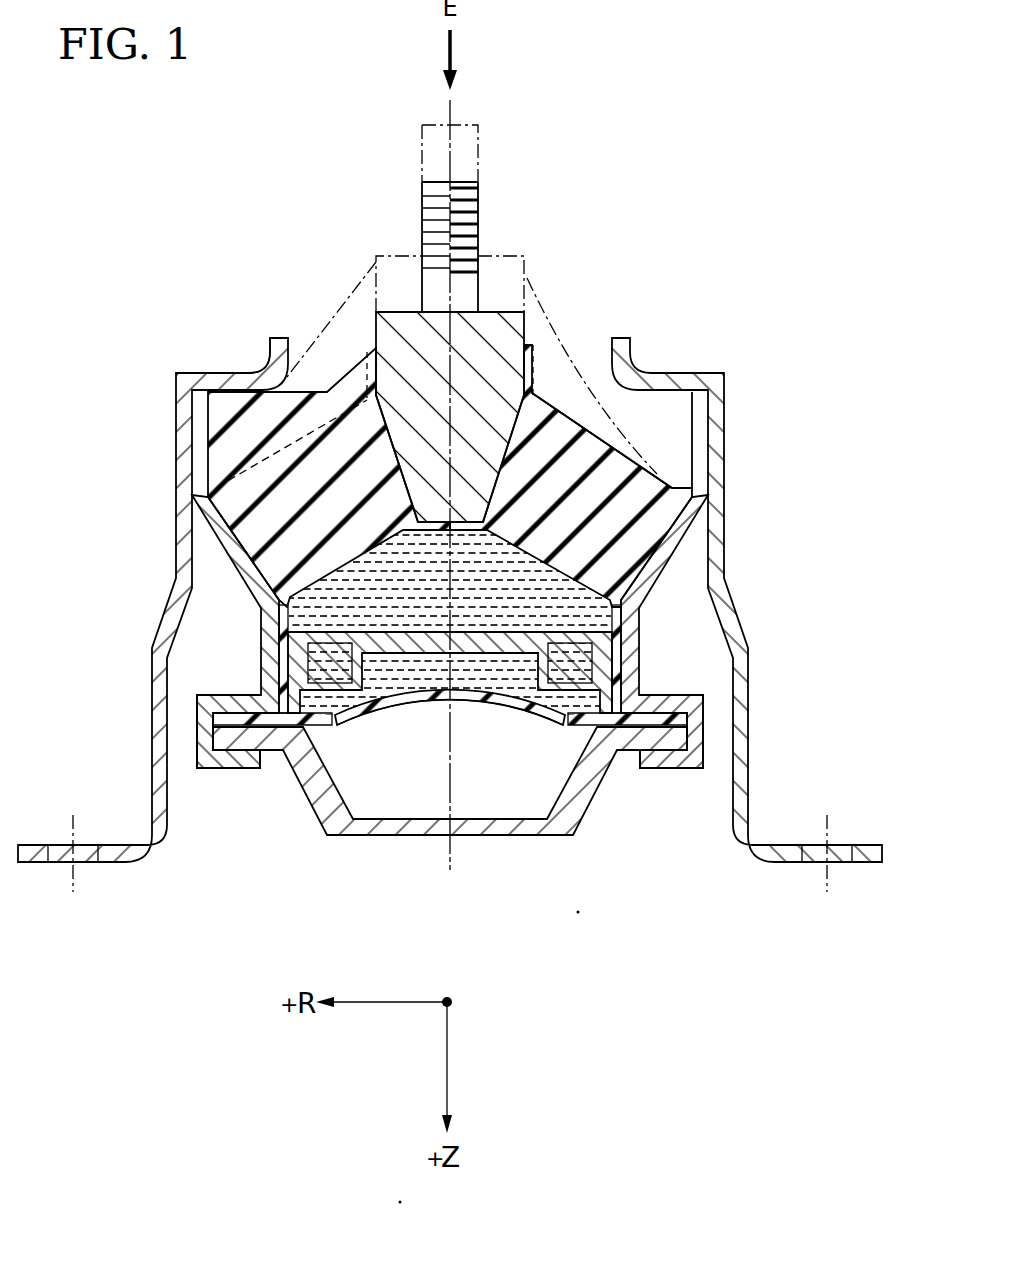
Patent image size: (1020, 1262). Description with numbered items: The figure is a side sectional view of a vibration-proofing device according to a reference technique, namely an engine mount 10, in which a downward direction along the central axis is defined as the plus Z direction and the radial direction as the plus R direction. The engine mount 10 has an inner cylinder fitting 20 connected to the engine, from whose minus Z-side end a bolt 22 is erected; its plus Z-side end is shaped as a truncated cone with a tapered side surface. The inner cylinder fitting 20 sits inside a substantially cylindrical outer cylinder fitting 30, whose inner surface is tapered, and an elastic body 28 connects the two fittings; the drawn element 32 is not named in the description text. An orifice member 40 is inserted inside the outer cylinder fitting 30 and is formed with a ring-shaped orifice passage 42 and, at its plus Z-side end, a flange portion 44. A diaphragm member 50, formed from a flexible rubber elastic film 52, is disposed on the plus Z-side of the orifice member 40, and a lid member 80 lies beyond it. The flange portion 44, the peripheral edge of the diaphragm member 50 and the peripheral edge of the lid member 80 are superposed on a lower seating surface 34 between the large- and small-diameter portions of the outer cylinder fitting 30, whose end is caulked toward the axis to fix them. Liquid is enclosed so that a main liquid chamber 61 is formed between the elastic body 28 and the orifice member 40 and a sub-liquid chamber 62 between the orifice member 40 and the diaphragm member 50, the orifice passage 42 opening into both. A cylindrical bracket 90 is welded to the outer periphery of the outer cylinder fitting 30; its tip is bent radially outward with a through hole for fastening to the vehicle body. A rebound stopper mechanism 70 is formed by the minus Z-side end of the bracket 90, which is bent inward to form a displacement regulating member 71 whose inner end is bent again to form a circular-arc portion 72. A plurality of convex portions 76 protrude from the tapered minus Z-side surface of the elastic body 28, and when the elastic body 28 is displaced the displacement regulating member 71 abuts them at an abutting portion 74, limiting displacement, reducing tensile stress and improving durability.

The engine mount 10 is at (650, 151).
The inner cylinder fitting 20 is at (497, 330).
The bolt 22 is at (478, 220).
The elastic body 28 is at (640, 497).
The outer cylinder fitting 30 is at (697, 540).
The second mounting member 32 is at (653, 576).
The lower seating surface 34 is at (663, 730).
The orifice member 40 is at (596, 660).
The orifice passage 42 is at (574, 657).
The flange portion 44 is at (637, 728).
The diaphragm member 50 is at (578, 750).
The rubber elastic film 52 is at (520, 733).
The main liquid chamber 61 is at (292, 612).
The sub-liquid chamber 62 is at (328, 713).
The rebound stopper mechanism 70 is at (212, 322).
The displacement regulating member 71 is at (206, 380).
The circular-arc portion 72 is at (287, 377).
The abutting portion 74 is at (241, 373).
The convex portions 76 is at (246, 437).
The lid member 80 is at (527, 838).
The bracket 90 is at (180, 570).